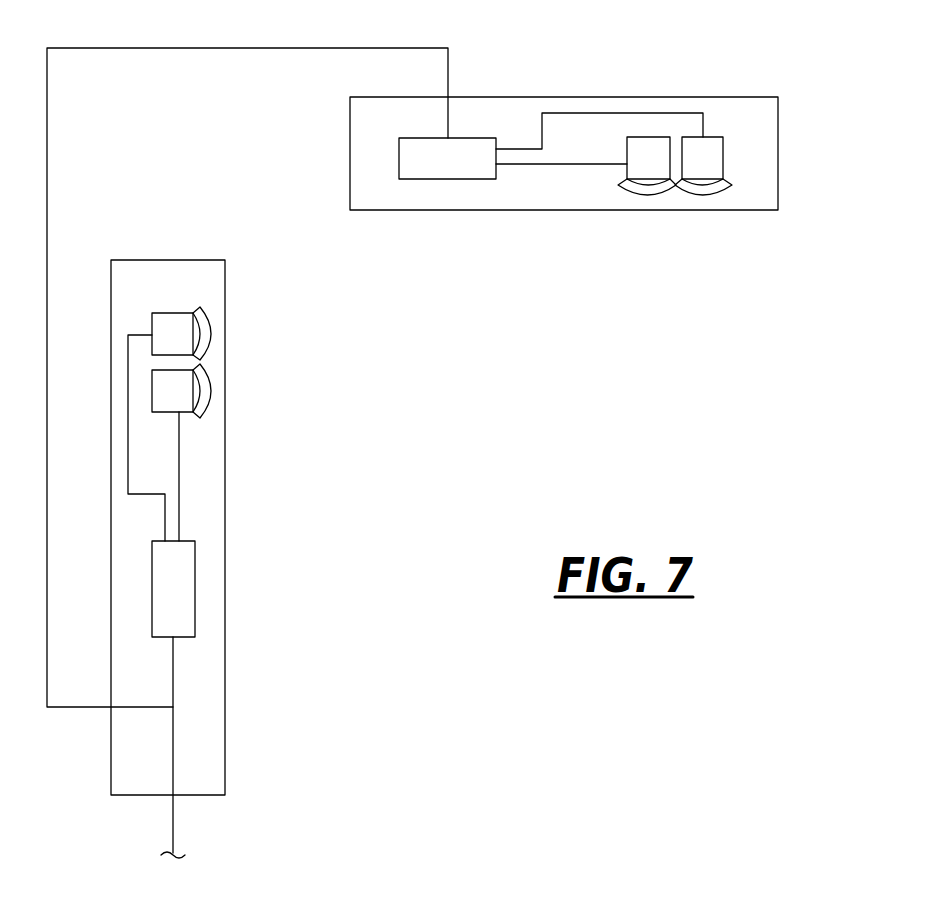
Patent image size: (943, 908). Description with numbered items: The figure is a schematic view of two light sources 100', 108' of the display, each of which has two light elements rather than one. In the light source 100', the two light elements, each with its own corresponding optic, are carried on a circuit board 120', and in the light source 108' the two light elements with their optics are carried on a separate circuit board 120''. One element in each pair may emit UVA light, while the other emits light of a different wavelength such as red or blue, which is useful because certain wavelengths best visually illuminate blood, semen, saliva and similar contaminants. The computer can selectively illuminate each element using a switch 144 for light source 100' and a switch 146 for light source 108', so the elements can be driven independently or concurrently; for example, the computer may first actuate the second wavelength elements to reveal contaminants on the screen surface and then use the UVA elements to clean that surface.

The light source 100' is at (760, 290).
The light source 108' is at (343, 546).
The circuit board 120' is at (595, 122).
The circuit board 120'' is at (215, 527).
The switch 144 is at (445, 165).
The switch 146 is at (178, 595).